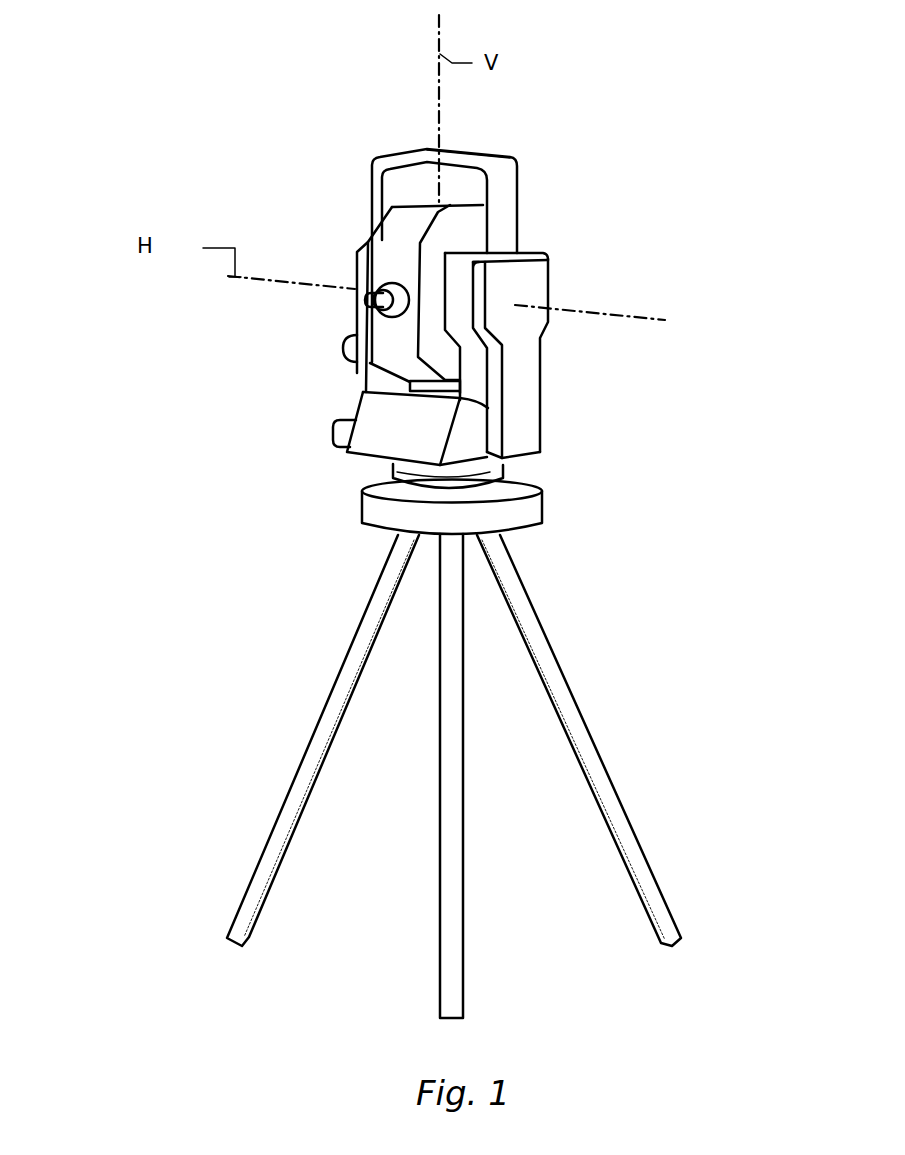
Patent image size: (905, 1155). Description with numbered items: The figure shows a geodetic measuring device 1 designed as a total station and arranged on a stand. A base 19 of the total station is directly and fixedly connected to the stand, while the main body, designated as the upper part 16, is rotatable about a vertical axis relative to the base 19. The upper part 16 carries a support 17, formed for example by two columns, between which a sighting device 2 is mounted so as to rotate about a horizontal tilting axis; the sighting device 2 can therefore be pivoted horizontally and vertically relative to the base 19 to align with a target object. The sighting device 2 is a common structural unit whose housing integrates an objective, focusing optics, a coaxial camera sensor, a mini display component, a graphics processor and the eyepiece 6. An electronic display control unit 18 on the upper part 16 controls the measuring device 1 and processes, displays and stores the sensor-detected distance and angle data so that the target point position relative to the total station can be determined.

The geodetic measuring device 1 is at (676, 51).
The sighting device 2 is at (410, 215).
The eyepiece 6 is at (362, 306).
The upper part 16 is at (680, 142).
The support 17 is at (540, 287).
The display control unit 18 is at (375, 440).
The base 19 is at (380, 516).